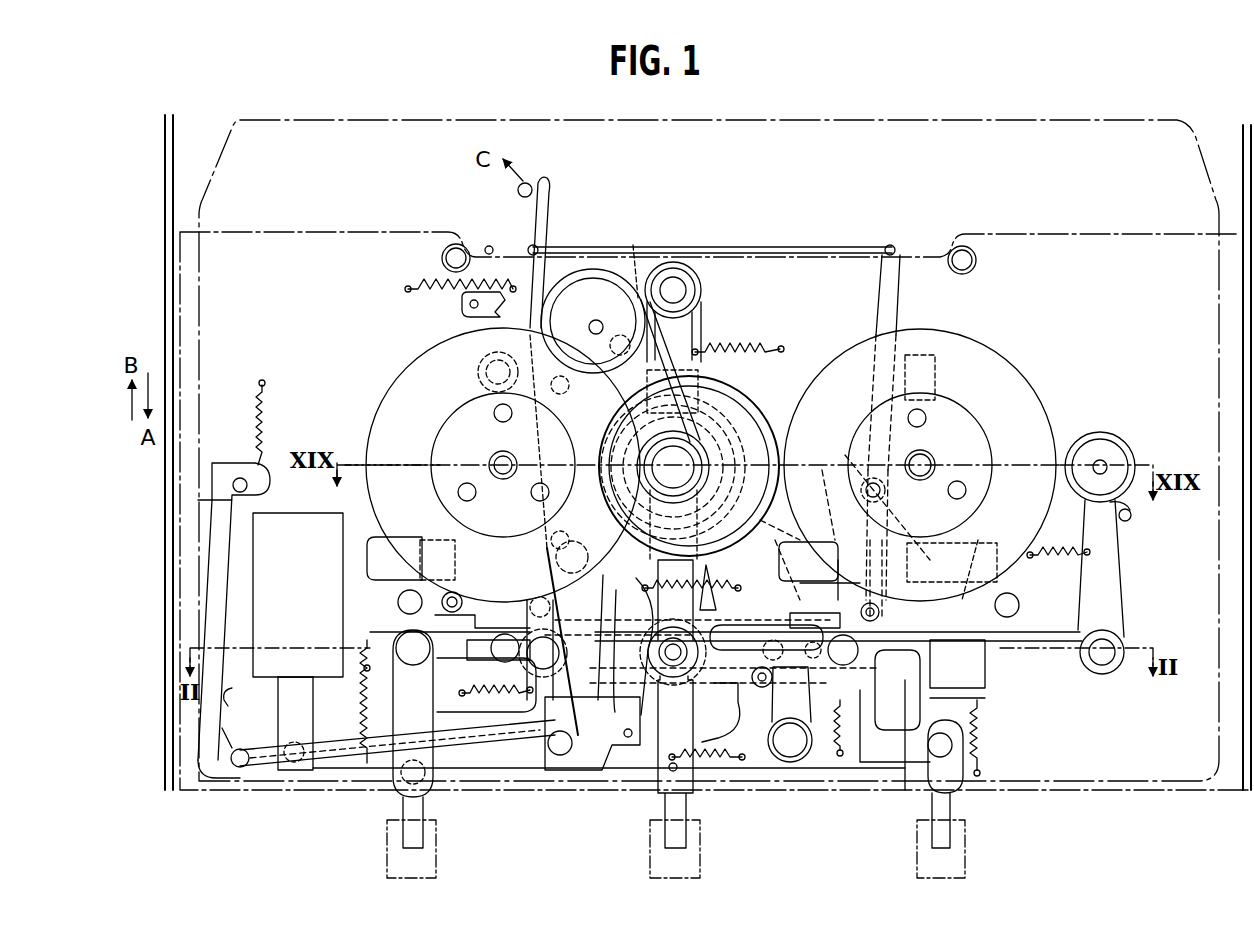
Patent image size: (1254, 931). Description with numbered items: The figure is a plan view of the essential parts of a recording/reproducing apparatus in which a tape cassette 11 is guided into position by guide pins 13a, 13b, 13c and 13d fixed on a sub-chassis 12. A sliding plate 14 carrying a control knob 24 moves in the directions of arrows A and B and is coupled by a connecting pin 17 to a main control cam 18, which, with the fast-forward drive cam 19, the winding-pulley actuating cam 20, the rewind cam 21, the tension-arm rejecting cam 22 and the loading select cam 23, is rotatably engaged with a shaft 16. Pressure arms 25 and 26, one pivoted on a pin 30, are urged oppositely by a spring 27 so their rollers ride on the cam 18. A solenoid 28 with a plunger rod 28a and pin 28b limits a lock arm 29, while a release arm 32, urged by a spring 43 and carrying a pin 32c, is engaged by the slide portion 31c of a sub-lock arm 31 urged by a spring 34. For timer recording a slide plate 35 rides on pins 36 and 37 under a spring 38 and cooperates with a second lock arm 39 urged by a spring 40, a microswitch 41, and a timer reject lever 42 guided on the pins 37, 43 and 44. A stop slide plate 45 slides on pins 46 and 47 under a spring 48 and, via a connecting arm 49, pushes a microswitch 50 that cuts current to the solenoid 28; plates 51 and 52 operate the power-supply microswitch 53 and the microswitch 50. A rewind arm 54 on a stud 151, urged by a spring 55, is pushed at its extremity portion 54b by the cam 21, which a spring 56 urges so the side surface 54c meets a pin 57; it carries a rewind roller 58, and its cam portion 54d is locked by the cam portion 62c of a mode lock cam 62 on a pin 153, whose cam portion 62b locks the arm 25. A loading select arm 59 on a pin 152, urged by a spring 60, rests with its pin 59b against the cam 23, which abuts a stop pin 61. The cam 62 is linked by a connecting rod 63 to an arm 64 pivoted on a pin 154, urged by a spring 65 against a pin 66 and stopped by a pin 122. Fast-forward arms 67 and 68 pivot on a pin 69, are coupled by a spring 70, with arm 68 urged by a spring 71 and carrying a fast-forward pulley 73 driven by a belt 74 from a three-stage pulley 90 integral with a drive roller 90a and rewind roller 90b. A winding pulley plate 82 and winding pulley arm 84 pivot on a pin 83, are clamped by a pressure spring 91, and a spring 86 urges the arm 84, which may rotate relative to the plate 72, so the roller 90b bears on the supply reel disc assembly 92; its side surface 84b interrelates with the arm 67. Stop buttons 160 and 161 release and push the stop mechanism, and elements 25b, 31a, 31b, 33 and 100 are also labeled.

The tape cassette 11 is at (1196, 170).
The sub-chassis 12 is at (1184, 796).
The guide pin 13a is at (1018, 604).
The guide pin 13b is at (397, 602).
The guide pin 13c is at (956, 248).
The guide pin 13d is at (456, 244).
The sliding plate 14 is at (663, 826).
The shaft 16 is at (686, 566).
The connecting pin 17 is at (677, 773).
The main control cam 18 is at (648, 568).
The fast-forward drive cam 19 is at (742, 762).
The cam for actuating the winding pulley 20 is at (710, 563).
The rewind cam 21 is at (798, 730).
The cam for rejecting a tension arm 22 is at (745, 728).
The loading select cam 23 is at (808, 561).
The control knob 24 is at (652, 848).
The pressure arm 25 is at (811, 752).
The pivot ring 25b is at (790, 763).
The pressure arm 26 is at (540, 758).
The spring 27 is at (650, 680).
The solenoid 28 is at (305, 512).
The plunger rod 28a is at (290, 672).
The pin 28b is at (297, 777).
The lock arm 29 is at (364, 716).
The pin 30 is at (577, 776).
The sub-lock arm 31 is at (232, 541).
The lever hook 31a is at (234, 697).
The lever pivot 31b is at (238, 477).
The slide portion 31c is at (232, 736).
The release arm 32 is at (350, 772).
The pin 32c is at (241, 772).
The spring 33 is at (470, 695).
The spring 34 is at (266, 428).
The slide plate 35 is at (960, 808).
The pin 36 is at (955, 748).
The pin 37 is at (980, 666).
The spring 38 is at (984, 700).
The second lock arm 39 is at (895, 776).
The spring 40 is at (904, 772).
The microswitch 41 is at (977, 543).
The timer reject lever 42 is at (982, 722).
The pin 43 is at (884, 580).
The pin 44 is at (502, 634).
The stop slide plate 45 is at (424, 822).
The pin 46 is at (431, 799).
The pin 47 is at (436, 560).
The spring 48 is at (364, 670).
The connecting arm 49 is at (488, 777).
The microswitch 50 is at (379, 539).
The plate 51 is at (880, 706).
The plate 52 is at (459, 594).
The microswitch 53 is at (823, 465).
The rewind arm 54 is at (1050, 650).
The extremity portion 54b is at (775, 616).
The side surface 54c is at (1132, 514).
The cam portion 54d is at (952, 562).
The spring 55 is at (1050, 553).
The spring 56 is at (720, 792).
The pin 57 is at (1128, 523).
The rewind roller 58 is at (1110, 434).
The loading select arm 59 is at (932, 378).
The pin 59b is at (796, 554).
The spring 60 is at (934, 463).
The stop pin 61 is at (830, 570).
The mode lock cam 62 is at (898, 290).
The cam portion 62b is at (784, 480).
The cam portion 62c is at (844, 726).
The connecting rod 63 is at (819, 250).
The arm 64 is at (552, 198).
The spring 65 is at (426, 284).
The pin 66 is at (526, 182).
The fast-forward arm 67 is at (580, 739).
The fast-forward arm 68 is at (518, 456).
The pin 69 is at (548, 575).
The spring 70 is at (550, 528).
The spring 71 is at (588, 477).
The plate 72 is at (590, 327).
The fast-forward pulley 73 is at (593, 285).
The belt 74 is at (702, 343).
The winding pulley plate 82 is at (702, 314).
The pin 83 is at (673, 262).
The winding pulley arm 84 is at (705, 362).
The side surface 84b is at (728, 484).
The spring 86 is at (750, 345).
The three-stage pulley 90 is at (706, 461).
The drive roller 90a is at (703, 424).
The rewind roller 90b is at (766, 410).
The pressure spring 91 is at (690, 266).
The supply reel disc assembly 92 is at (1010, 350).
The reel table 100 is at (401, 368).
The pin 122 is at (489, 246).
The stud 151 is at (1108, 668).
The pin 152 is at (927, 415).
The pin 153 is at (886, 500).
The pin 154 is at (478, 376).
The stop button 160 is at (385, 846).
The stop button 161 is at (915, 846).